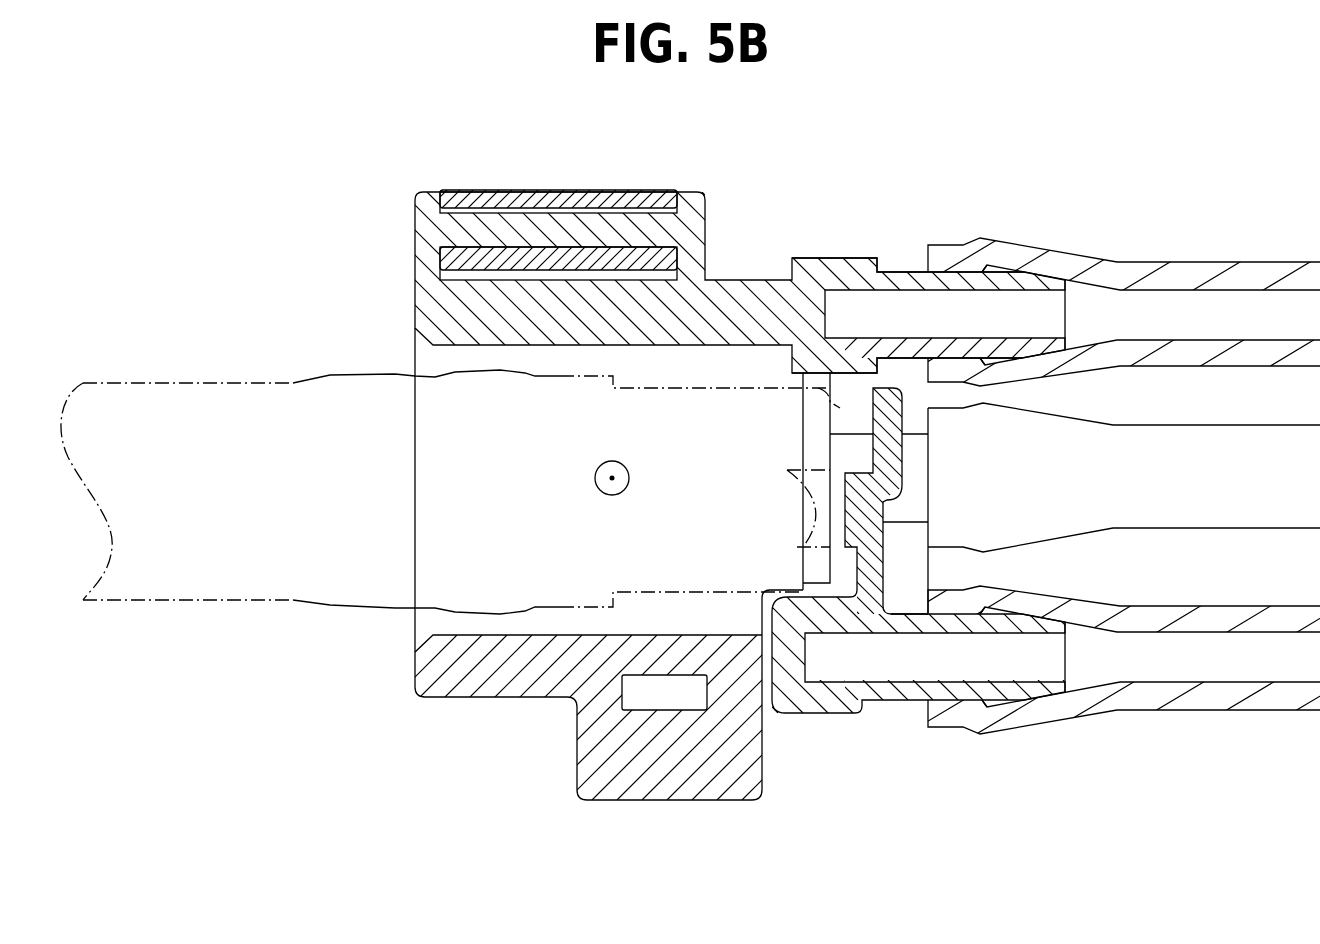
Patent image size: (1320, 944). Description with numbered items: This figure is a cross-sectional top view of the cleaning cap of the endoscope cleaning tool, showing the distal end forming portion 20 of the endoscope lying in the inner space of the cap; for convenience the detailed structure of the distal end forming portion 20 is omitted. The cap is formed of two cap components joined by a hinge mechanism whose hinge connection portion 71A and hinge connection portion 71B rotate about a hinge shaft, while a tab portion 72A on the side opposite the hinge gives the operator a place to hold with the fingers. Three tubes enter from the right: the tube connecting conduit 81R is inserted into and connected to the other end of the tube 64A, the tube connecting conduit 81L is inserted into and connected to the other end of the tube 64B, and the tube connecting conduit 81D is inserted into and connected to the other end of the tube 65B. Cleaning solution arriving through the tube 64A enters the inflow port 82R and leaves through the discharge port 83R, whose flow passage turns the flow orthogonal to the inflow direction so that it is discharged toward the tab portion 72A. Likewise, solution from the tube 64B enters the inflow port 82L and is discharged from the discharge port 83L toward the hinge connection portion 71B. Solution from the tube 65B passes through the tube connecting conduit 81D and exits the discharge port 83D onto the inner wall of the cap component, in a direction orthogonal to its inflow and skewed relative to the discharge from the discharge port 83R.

The distal end forming portion 20 is at (733, 385).
The hinge connection portion 71A is at (693, 232).
The hinge connection portion 71B is at (618, 200).
The tab portion 72A is at (705, 792).
The tube connecting conduit 81R is at (902, 270).
The tube connecting conduit 81L is at (903, 703).
The tube connecting conduit 81D is at (905, 505).
The inflow port 82R is at (1069, 312).
The inflow port 82L is at (1069, 660).
The discharge port 83R is at (834, 372).
The discharge port 83L is at (814, 600).
The discharge port 83D is at (611, 482).
The tube 64A is at (1196, 276).
The tube 64B is at (1183, 696).
The tube 65B is at (1189, 505).